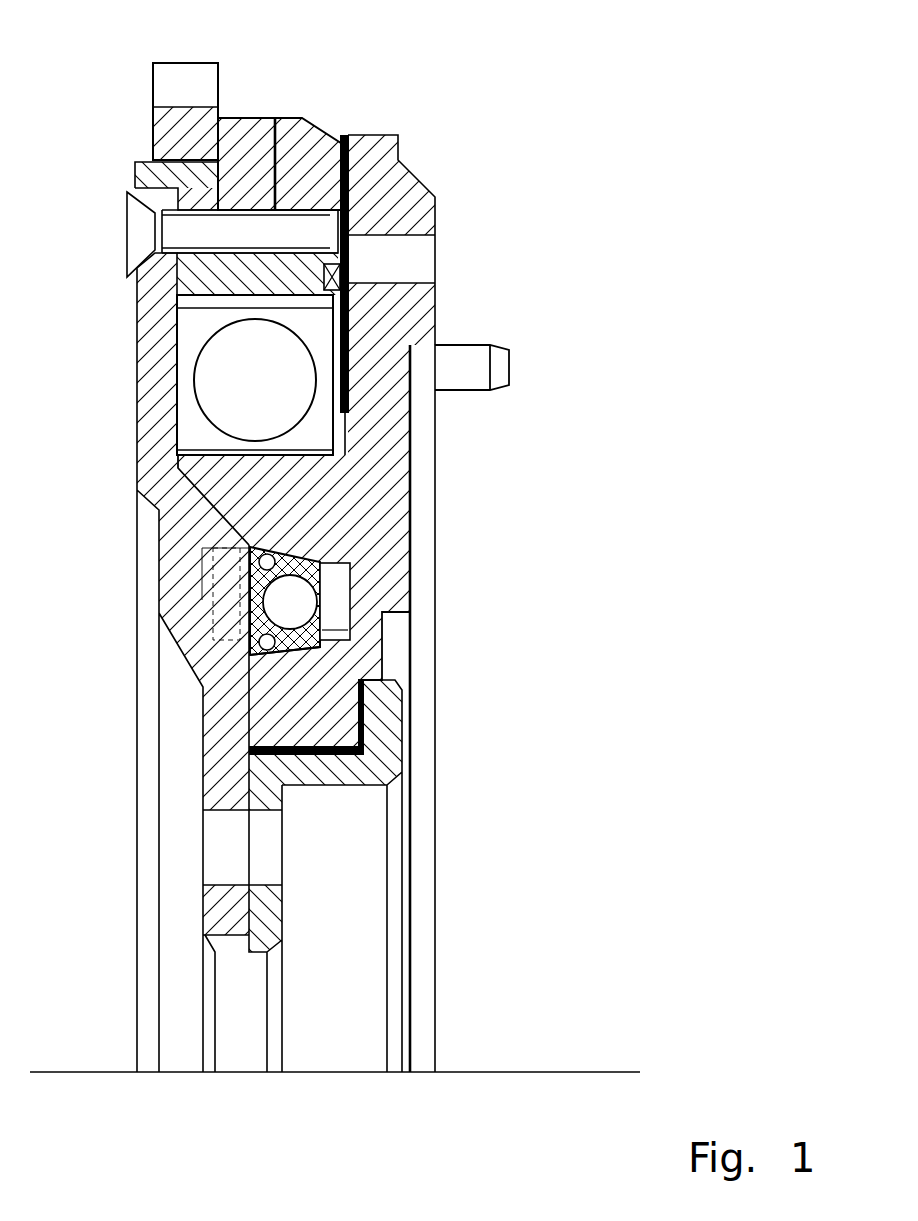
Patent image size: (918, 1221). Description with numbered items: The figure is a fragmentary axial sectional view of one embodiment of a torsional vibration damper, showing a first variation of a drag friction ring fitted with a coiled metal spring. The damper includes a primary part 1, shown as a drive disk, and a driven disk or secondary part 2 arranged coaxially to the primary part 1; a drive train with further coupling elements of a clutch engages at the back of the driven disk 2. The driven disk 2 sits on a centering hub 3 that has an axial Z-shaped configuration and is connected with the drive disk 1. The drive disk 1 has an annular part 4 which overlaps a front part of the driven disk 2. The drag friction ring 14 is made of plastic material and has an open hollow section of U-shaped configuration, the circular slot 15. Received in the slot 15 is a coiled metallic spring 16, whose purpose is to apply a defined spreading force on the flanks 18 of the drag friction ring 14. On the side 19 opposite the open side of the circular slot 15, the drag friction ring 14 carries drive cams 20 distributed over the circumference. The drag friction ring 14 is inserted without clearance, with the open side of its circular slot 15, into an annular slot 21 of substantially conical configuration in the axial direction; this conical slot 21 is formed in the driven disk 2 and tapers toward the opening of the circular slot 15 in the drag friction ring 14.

The primary part 1 is at (150, 375).
The secondary part 2 is at (387, 322).
The centering hub 3 is at (383, 742).
The annular part 4 is at (250, 150).
The drag friction ring 14 is at (322, 537).
The circular slot 15 is at (343, 612).
The coiled metallic spring 16 is at (290, 602).
The flanks 18 is at (320, 655).
The side 19 is at (247, 640).
The drive cams 20 is at (237, 620).
The annular slot 21 is at (343, 628).